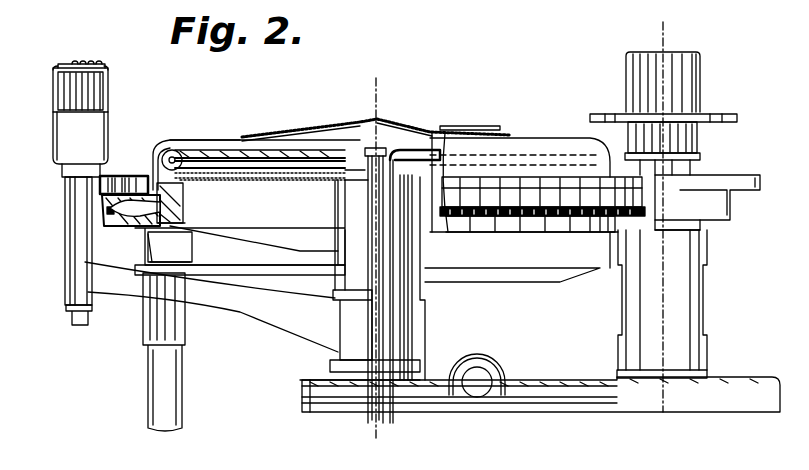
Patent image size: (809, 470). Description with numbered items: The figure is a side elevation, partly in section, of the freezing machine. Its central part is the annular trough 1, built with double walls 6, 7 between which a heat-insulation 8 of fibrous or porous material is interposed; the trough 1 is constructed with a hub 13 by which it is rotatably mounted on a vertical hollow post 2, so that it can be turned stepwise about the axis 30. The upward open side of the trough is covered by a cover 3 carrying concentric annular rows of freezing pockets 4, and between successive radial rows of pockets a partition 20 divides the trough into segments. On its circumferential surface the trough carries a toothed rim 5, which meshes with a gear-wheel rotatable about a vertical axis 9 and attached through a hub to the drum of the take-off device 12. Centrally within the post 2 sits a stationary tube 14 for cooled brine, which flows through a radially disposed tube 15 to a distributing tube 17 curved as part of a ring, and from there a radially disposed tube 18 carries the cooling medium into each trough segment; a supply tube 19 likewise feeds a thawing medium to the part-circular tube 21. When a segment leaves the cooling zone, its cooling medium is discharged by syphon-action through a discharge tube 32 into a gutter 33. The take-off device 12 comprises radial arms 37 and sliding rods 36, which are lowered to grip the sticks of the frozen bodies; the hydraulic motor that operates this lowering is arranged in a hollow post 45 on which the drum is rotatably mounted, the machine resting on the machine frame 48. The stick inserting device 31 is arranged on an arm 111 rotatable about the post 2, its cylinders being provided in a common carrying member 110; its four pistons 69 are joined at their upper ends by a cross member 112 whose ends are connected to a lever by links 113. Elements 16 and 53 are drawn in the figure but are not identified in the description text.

The annular trough 1 is at (108, 196).
The vertical hollow post 2 is at (405, 280).
The cover 3 is at (113, 176).
The freezing pockets 4 is at (127, 176).
The toothed rim 5 is at (108, 212).
The double wall 6 is at (188, 212).
The double wall 7 is at (195, 226).
The heat-insulation 8 is at (108, 222).
The vertical axis 9 is at (663, 35).
The take-off device 12 is at (700, 72).
The hub 13 is at (435, 230).
The stationary tube 14 is at (384, 150).
The radially disposed tube 15 is at (262, 160).
The rib 16 is at (310, 130).
The distributing tube 17 is at (178, 148).
The radially disposed tube 18 is at (186, 204).
The supply tube 19 is at (396, 420).
The partition 20 is at (162, 150).
The distributing tube 21 is at (582, 165).
The axis of rotation 30 is at (376, 100).
The stick inserting device 31 is at (64, 116).
The discharge tube 32 is at (130, 216).
The gutter 33 is at (188, 250).
The sliding rod 36 is at (670, 130).
The arm 37 is at (603, 118).
The hollow post 45 is at (690, 300).
The machine frame 48 is at (548, 380).
The bracket arm 53 is at (732, 200).
The pistons 69 is at (70, 66).
The common carrying member 110 is at (68, 282).
The arm 111 is at (130, 312).
The cross member 112 is at (72, 63).
The links 113 is at (56, 66).